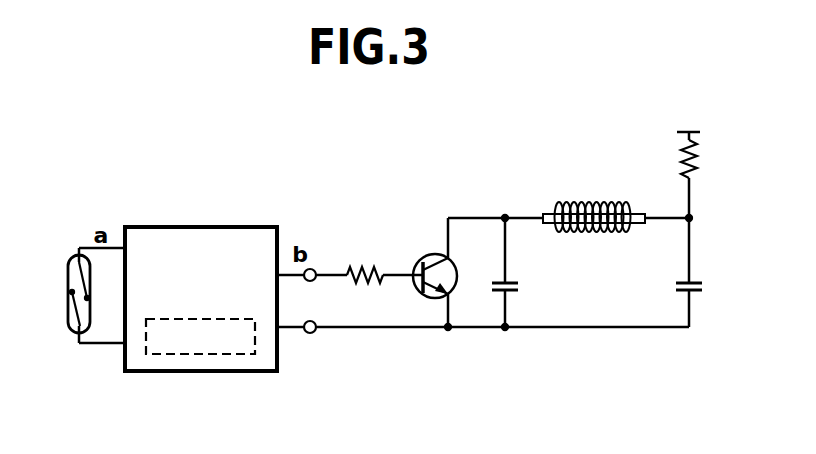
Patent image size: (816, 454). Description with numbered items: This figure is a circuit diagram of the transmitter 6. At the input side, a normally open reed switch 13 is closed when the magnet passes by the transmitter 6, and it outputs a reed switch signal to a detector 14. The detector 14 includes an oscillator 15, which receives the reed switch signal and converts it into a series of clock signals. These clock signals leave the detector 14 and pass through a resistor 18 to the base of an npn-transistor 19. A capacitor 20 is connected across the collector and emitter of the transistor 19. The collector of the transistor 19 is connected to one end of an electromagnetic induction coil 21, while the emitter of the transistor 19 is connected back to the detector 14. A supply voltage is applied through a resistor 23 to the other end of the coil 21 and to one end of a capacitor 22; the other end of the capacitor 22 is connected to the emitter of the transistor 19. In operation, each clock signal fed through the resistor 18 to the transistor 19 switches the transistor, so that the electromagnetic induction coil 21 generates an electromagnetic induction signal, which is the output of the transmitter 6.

The transmitter 6 is at (404, 341).
The reed switch 13 is at (76, 331).
The detector 14 is at (211, 227).
The oscillator 15 is at (217, 355).
The resistor 18 is at (361, 264).
The npn-transistor 19 is at (428, 256).
The capacitor 20 is at (513, 282).
The electromagnetic induction coil 21 is at (580, 202).
The capacitor 22 is at (696, 281).
The resistor 23 is at (696, 171).